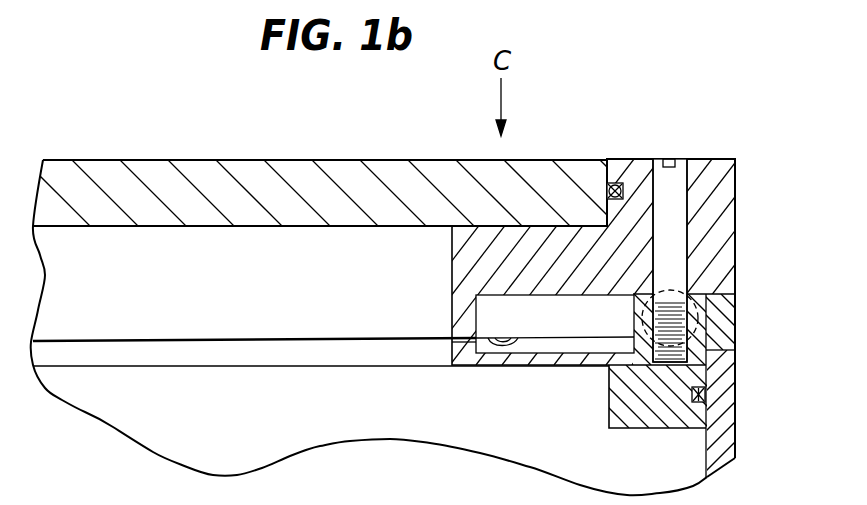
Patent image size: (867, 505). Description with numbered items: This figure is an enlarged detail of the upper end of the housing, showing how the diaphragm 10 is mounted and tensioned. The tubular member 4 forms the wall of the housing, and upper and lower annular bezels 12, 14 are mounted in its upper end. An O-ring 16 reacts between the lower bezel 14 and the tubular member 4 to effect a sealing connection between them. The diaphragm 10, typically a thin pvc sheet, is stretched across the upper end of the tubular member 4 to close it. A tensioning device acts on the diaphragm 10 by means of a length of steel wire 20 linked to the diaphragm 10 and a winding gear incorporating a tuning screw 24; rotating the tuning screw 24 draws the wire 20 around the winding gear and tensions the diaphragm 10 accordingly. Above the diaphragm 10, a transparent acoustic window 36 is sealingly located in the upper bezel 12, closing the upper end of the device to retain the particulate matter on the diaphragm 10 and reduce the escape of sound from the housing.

The tubular member 4 is at (727, 383).
The diaphragm 10 is at (305, 339).
The upper annular bezel 12 is at (730, 213).
The lower annular bezel 14 is at (608, 397).
The O-ring 16 is at (693, 403).
The steel wire 20 is at (543, 337).
The tuning screw 24 is at (663, 164).
The transparent acoustic window 36 is at (302, 160).